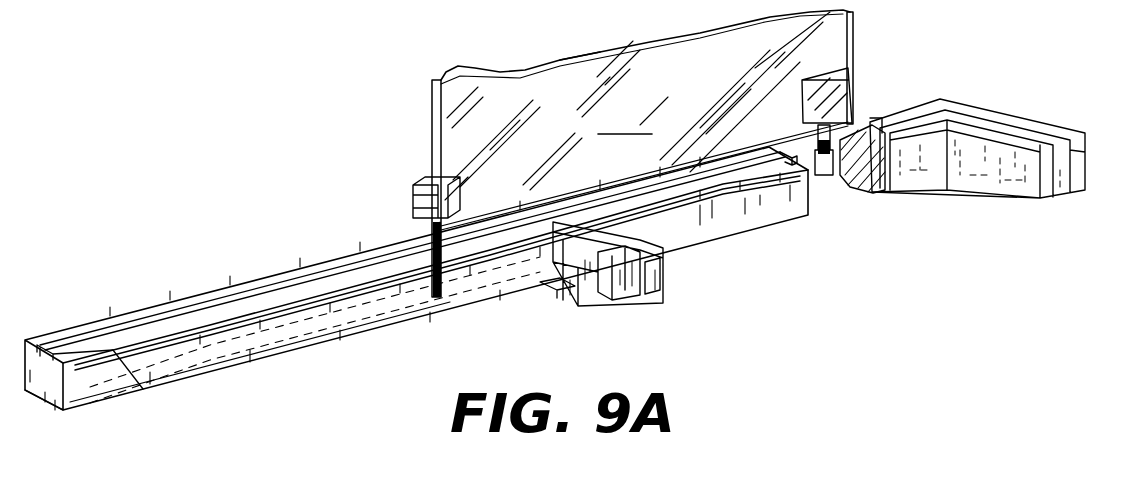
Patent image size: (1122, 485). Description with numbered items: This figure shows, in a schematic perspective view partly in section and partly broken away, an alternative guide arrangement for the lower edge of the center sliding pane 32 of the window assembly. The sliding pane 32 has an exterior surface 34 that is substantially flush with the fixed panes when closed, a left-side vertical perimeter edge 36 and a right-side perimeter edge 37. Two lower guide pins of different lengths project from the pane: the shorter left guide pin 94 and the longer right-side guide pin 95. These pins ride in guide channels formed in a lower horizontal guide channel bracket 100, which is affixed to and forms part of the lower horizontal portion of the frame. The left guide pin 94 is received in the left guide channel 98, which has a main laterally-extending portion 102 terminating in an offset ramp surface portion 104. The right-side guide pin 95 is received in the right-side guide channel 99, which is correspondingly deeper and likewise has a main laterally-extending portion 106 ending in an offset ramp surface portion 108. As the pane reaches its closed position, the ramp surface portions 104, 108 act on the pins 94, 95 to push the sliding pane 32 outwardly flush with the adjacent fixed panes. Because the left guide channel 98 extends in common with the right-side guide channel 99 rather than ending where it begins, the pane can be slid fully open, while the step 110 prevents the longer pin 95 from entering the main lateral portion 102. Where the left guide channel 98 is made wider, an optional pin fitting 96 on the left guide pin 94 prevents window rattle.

The center sliding pane 32 is at (645, 120).
The exterior surface 34 is at (597, 58).
The left-side vertical perimeter edge 36 is at (433, 105).
The right-side perimeter edge 37 is at (857, 45).
The left guide pin 94 is at (852, 147).
The right-side guide pin 95 is at (425, 232).
The pin fitting 96 is at (826, 175).
The left guide channel 98 is at (891, 190).
The right-side guide channel 99 is at (238, 322).
The lower horizontal guide channel bracket 100 is at (108, 393).
The main laterally-extending portion 102 is at (670, 188).
The ramp surface portion 104 is at (1058, 173).
The main laterally-extending portion 106 is at (272, 335).
The ramp surface portion 108 is at (543, 270).
The step 110 is at (548, 262).